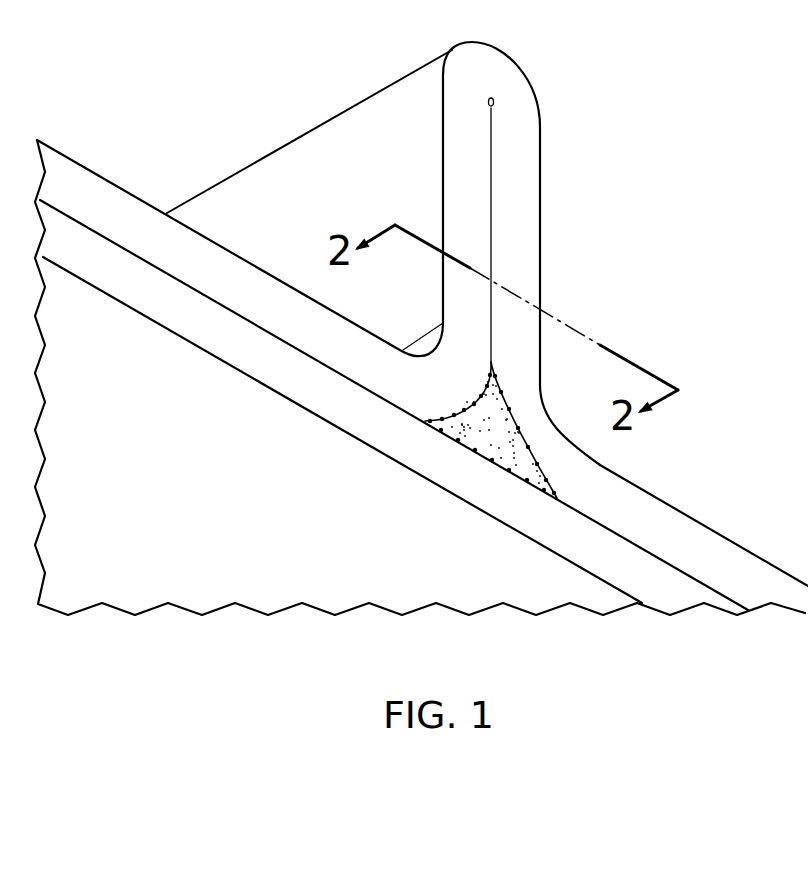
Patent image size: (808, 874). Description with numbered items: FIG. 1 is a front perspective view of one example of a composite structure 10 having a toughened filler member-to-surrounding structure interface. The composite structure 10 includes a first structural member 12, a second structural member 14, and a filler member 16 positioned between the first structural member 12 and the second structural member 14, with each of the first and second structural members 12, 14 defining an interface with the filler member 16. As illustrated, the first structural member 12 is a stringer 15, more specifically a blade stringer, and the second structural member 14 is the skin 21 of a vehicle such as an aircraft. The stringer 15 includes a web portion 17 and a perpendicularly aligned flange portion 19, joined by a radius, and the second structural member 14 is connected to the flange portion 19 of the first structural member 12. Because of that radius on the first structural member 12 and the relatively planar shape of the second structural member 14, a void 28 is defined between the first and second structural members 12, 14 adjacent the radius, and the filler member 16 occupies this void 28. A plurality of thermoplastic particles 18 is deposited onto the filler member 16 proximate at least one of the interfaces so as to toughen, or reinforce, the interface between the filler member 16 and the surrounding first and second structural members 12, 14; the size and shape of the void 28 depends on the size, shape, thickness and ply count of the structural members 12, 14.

The composite structure 10 is at (718, 112).
The first structural member 12 is at (540, 193).
The second structural member 14 is at (615, 548).
The stringer 15 is at (540, 245).
The filler member 16 is at (520, 446).
The web portion 17 is at (540, 294).
The thermoplastic particles 18 is at (476, 402).
The flange portion 19 is at (90, 168).
The skin 21 is at (520, 558).
The void 28 is at (495, 410).